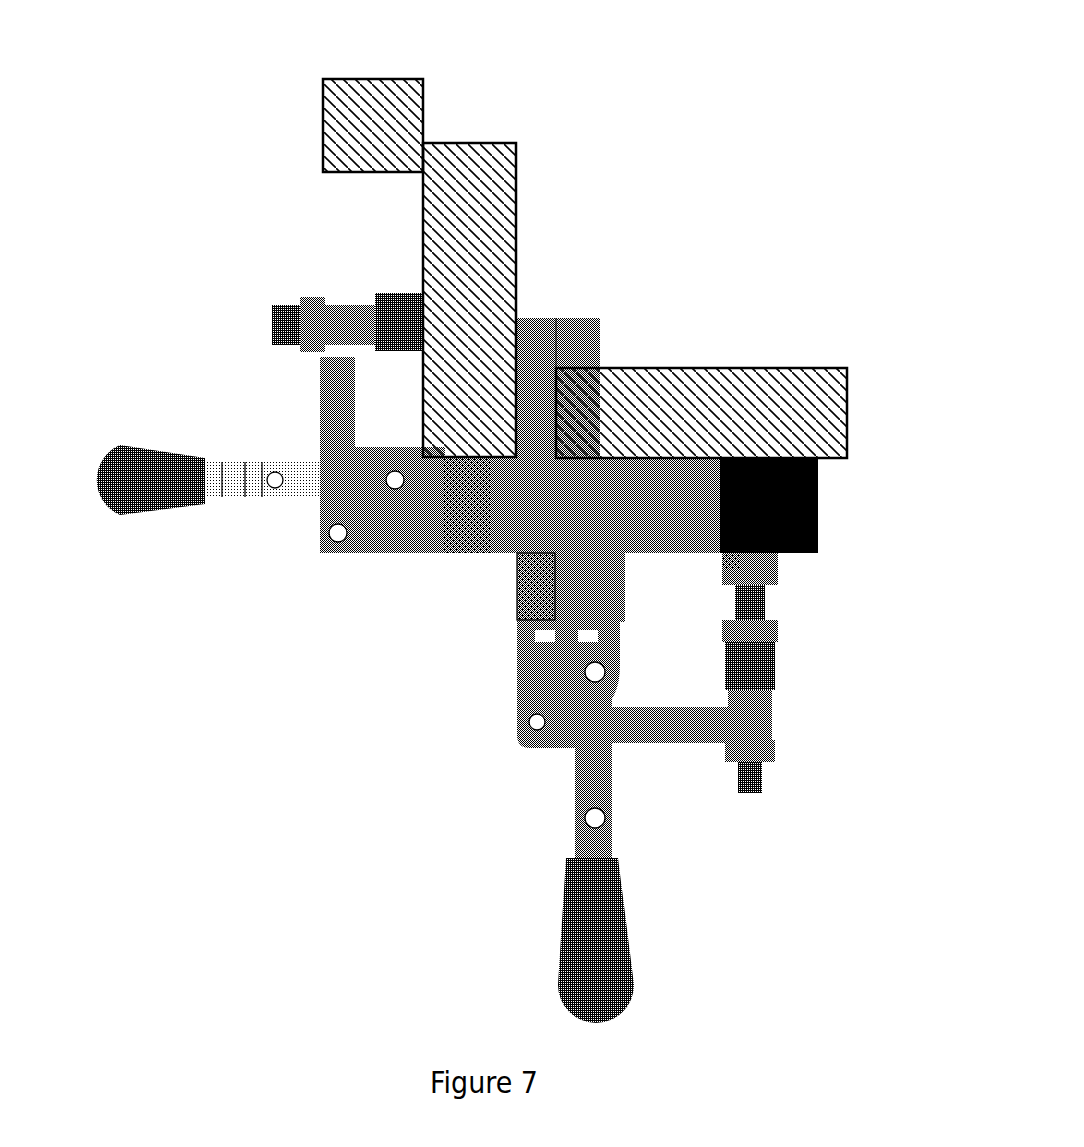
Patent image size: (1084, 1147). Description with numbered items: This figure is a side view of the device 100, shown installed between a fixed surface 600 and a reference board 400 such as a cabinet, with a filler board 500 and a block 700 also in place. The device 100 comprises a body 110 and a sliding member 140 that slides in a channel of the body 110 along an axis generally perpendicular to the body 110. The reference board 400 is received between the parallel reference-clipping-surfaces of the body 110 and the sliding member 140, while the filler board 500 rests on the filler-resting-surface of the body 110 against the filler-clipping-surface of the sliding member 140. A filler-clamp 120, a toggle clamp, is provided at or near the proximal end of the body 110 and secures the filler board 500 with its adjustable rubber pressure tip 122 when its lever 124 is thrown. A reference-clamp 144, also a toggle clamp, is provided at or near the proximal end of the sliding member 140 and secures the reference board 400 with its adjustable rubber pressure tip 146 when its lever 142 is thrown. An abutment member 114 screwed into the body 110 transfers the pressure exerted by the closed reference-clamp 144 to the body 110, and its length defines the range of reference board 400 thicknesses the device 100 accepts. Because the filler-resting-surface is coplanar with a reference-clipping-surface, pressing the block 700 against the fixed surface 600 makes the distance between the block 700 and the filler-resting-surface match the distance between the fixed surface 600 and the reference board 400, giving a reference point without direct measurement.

The fixed surface 600 is at (538, 33).
The block 700 is at (323, 143).
The filler board 500 is at (478, 192).
The reference board 400 is at (750, 418).
The sliding member 140 is at (563, 318).
The device 100 is at (283, 772).
The body 110 is at (515, 522).
The abutment member 114 is at (772, 570).
The filler-clamp 120 is at (315, 470).
The adjustable rubber pressure tip 122 is at (415, 318).
The lever 124 is at (108, 470).
The lever 142 is at (598, 975).
The reference-clamp 144 is at (530, 690).
The adjustable rubber pressure tip 146 is at (780, 672).